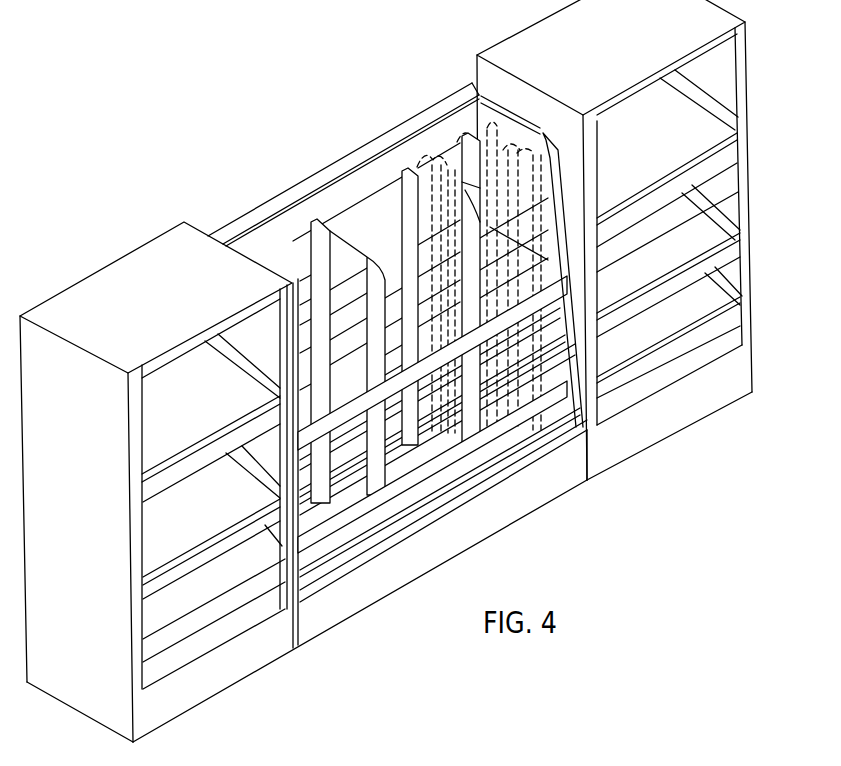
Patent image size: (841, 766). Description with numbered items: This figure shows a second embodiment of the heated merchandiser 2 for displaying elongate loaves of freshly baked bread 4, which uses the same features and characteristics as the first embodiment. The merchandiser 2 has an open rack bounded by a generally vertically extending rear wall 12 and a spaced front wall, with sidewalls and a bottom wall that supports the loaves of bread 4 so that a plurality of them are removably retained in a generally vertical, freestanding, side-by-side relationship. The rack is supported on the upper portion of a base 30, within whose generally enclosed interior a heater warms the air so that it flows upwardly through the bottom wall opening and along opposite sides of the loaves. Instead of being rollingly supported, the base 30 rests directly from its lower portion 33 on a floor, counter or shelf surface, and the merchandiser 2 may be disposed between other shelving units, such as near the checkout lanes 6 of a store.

The merchandiser 2 is at (348, 128).
The loaves of freshly baked bread 4 is at (445, 132).
The checkout lanes 6 is at (90, 9).
The rear wall 12 is at (272, 200).
The base 30 is at (526, 505).
The lower portion 33 is at (343, 623).